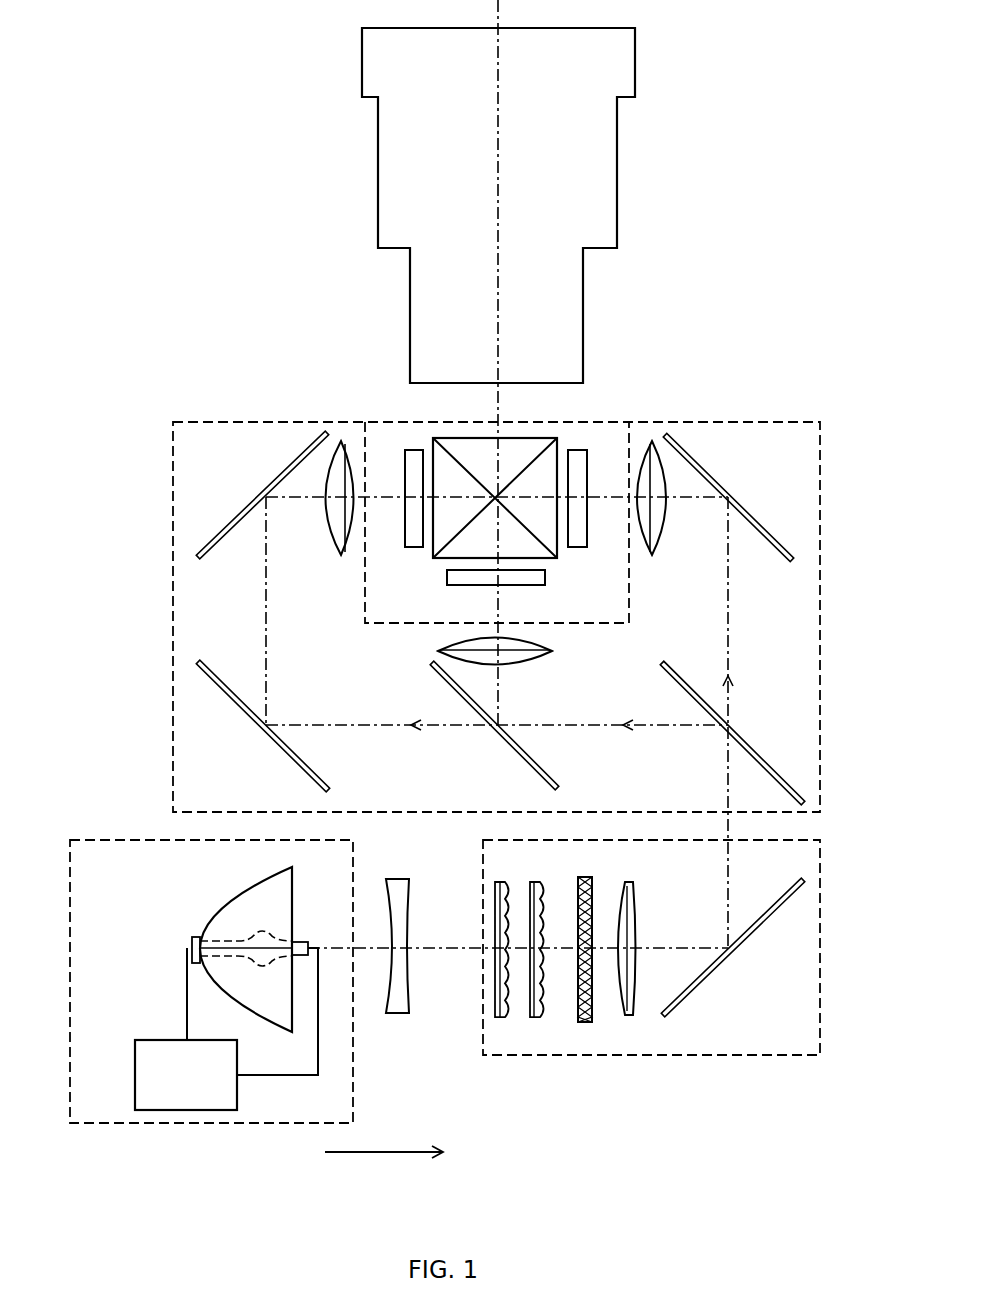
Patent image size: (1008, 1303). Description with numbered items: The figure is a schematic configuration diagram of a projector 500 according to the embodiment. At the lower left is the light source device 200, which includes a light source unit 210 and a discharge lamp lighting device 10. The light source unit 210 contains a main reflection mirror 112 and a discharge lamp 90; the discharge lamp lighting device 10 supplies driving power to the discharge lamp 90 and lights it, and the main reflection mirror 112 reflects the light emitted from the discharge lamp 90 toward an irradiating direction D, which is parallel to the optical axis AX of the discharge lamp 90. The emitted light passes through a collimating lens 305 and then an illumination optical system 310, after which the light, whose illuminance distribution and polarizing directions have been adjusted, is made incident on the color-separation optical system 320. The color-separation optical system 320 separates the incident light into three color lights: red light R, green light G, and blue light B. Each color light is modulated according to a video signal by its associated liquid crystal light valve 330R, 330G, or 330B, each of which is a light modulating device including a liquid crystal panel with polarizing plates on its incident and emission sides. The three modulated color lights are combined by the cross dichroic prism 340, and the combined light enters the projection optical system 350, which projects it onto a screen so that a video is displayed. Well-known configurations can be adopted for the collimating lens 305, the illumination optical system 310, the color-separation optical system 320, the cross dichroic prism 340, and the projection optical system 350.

The projector 500 is at (725, 13).
The projection optical system 350 is at (635, 210).
The cross dichroic prism 340 is at (482, 438).
The liquid crystal light valve 330R is at (580, 450).
The liquid crystal light valve 330G is at (530, 585).
The liquid crystal light valve 330B is at (414, 547).
The color-separation optical system 320 is at (523, 685).
The illumination optical system 310 is at (820, 1010).
The collimating lens 305 is at (395, 1013).
The light source device 200 is at (211, 1004).
The light source unit 210 is at (210, 945).
The main reflection mirror 112 is at (218, 905).
The discharge lamp 90 is at (300, 940).
The discharge lamp lighting device 10 is at (135, 1083).
The blue light B is at (266, 637).
The red light R is at (728, 633).
The green light G is at (497, 675).
The optical axis AX is at (458, 950).
The irradiating direction D is at (394, 1154).